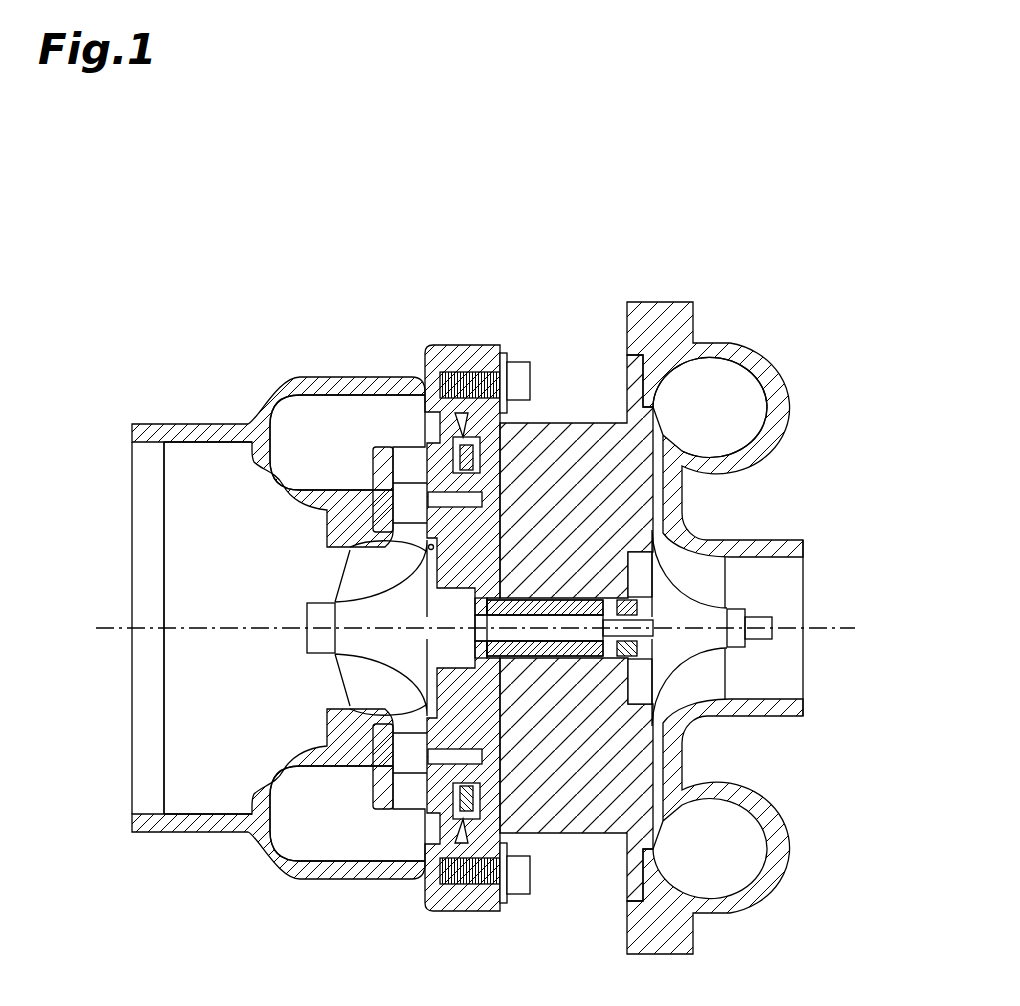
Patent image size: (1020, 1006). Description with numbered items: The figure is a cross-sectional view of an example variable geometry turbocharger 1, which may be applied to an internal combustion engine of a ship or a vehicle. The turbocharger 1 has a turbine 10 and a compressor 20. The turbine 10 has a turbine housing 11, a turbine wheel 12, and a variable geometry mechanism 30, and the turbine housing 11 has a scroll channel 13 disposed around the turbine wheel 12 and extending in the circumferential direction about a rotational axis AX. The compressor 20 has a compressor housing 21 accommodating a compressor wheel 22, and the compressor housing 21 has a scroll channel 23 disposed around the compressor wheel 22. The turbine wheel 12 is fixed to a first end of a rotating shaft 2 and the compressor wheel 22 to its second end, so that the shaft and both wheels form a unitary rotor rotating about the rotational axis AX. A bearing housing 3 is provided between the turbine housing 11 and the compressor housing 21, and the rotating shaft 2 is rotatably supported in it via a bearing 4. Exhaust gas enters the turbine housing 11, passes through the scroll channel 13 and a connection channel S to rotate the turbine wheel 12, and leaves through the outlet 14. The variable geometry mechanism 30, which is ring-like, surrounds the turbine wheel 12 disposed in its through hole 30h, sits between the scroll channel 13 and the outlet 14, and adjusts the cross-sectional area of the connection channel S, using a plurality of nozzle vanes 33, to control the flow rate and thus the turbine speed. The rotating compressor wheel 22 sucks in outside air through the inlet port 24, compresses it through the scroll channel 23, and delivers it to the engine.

The turbocharger 1 is at (800, 192).
The rotating shaft 2 is at (567, 643).
The bearing housing 3 is at (537, 432).
The bearing 4 is at (587, 658).
The turbine 10 is at (270, 268).
The turbine housing 11 is at (293, 392).
The turbine wheel 12 is at (300, 610).
The scroll channel 13 is at (343, 417).
The outlet 14 is at (283, 543).
The compressor 20 is at (773, 330).
The compressor housing 21 is at (770, 447).
The compressor wheel 22 is at (755, 720).
The scroll channel 23 is at (753, 408).
The inlet port 24 is at (780, 590).
The variable geometry mechanism 30 is at (413, 441).
The through hole 30h is at (427, 546).
The nozzle vanes 33 is at (405, 507).
The connection channel S is at (405, 467).
The rotational axis AX is at (815, 632).